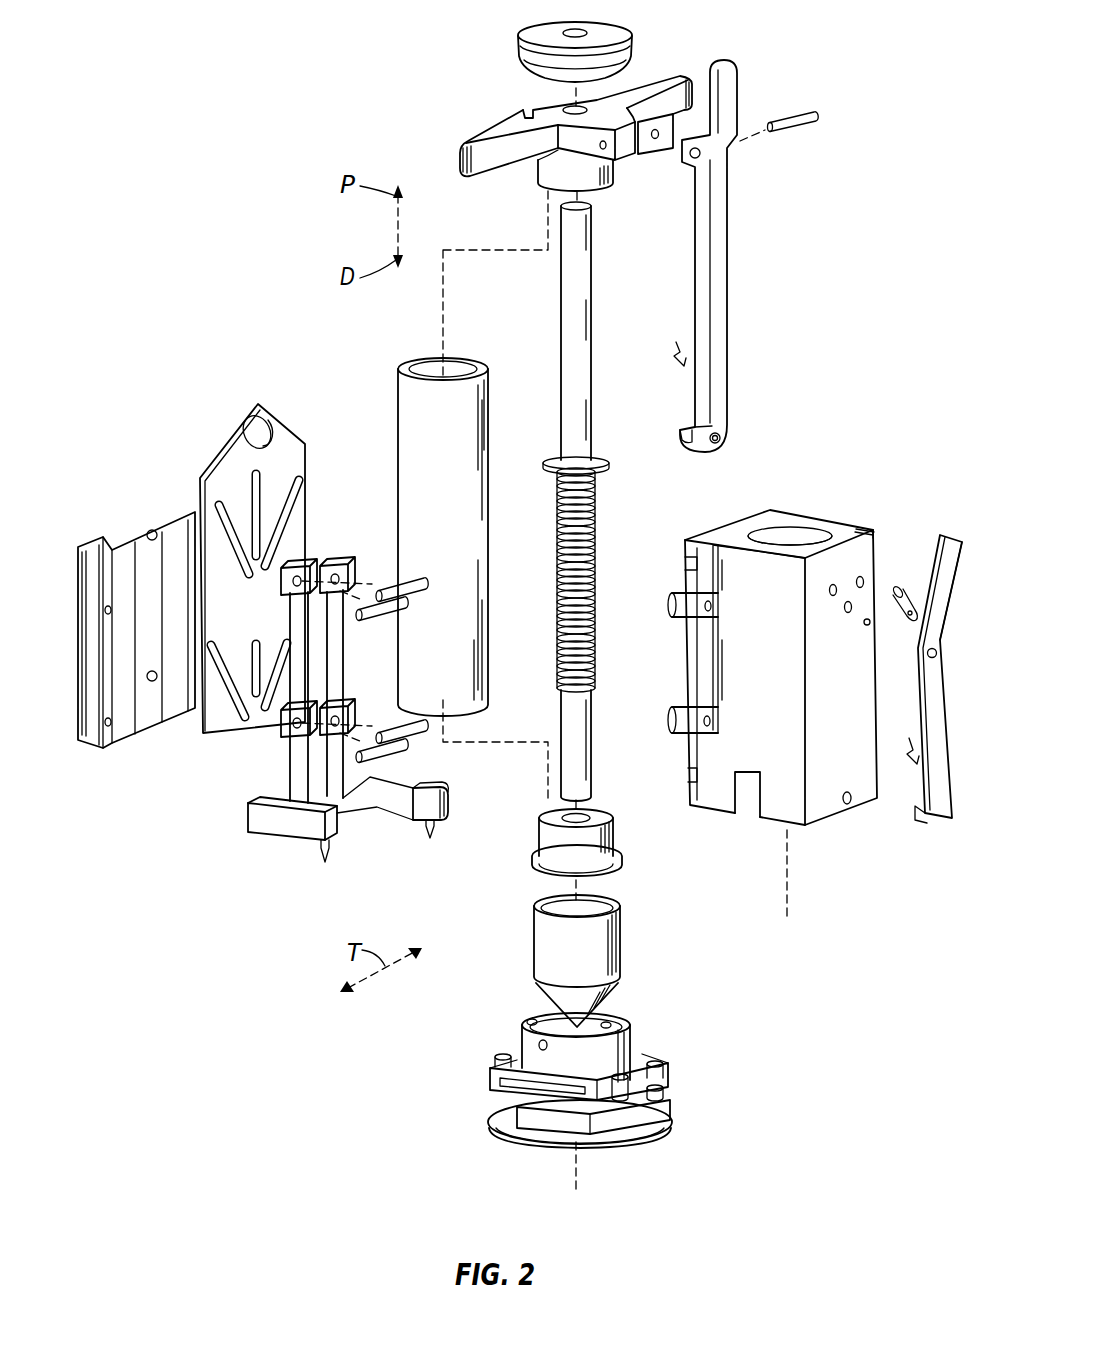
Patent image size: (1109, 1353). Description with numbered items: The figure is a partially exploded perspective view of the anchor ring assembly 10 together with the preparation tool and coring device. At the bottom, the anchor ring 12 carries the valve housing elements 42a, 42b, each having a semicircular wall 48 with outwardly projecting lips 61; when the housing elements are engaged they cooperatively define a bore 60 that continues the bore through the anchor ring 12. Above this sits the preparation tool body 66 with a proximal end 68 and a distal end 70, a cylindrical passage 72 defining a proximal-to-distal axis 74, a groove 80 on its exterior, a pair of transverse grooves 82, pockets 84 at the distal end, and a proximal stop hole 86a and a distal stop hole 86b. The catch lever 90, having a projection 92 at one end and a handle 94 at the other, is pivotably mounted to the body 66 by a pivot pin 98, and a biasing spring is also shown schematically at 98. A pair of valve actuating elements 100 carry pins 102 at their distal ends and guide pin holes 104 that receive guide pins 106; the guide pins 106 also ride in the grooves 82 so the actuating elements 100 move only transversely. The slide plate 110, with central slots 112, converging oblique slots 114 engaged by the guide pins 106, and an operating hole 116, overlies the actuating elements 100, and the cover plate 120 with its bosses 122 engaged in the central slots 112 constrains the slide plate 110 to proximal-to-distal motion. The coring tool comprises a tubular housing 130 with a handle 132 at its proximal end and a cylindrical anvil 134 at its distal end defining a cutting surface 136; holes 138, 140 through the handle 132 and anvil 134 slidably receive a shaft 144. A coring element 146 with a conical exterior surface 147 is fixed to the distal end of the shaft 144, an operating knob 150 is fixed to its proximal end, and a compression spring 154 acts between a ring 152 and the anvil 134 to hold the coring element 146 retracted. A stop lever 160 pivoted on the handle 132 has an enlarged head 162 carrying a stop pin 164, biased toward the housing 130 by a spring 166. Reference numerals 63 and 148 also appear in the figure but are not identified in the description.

The anchor ring assembly 10 is at (684, 1066).
The anchor ring 12 is at (507, 1139).
The valve housing element 42a is at (641, 1062).
The valve housing element 42b is at (519, 1059).
The semicircular wall 48 is at (523, 1021).
The bore 60 is at (604, 1017).
The lips 61 is at (528, 1017).
The central axis 63 is at (582, 1163).
The preparation tool body 66 is at (810, 524).
The proximal end 68 is at (760, 523).
The distal end 70 is at (797, 828).
The cylindrical passage 72 is at (790, 533).
The proximal-to-distal axis 74 is at (790, 912).
The groove 80 is at (860, 525).
The grooves 82 is at (672, 596).
The pockets 84 is at (752, 795).
The proximal stop hole 86a is at (845, 607).
The distal stop hole 86b is at (848, 806).
The catch lever 90 is at (950, 750).
The projection 92 is at (923, 820).
The handle 94 is at (957, 586).
The pivot pin 98 is at (900, 588).
The valve actuating elements 100 is at (421, 786).
The pins 102 is at (320, 850).
The guide pin holes 104 is at (334, 572).
The guide pins 106 is at (366, 604).
The slide plate 110 is at (224, 438).
The central slots 112 is at (268, 478).
The oblique slots 114 is at (296, 480).
The operating hole 116 is at (257, 416).
The cover plate 120 is at (130, 525).
The bosses 122 is at (152, 528).
The tubular housing 130 is at (405, 380).
The handle 132 is at (470, 146).
The anvil 134 is at (540, 840).
The cutting surface 136 is at (612, 875).
The hole 138 is at (568, 110).
The hole 140 is at (600, 815).
The shaft 144 is at (568, 312).
The coring element 146 is at (622, 952).
The conical exterior surface 147 is at (602, 985).
The cup rim 148 is at (538, 908).
The operating knob 150 is at (620, 46).
The ring 152 is at (607, 470).
The compression spring 154 is at (598, 622).
The stop lever 160 is at (730, 248).
The enlarged head 162 is at (728, 440).
The stop pin 164 is at (682, 434).
The spring 166 is at (672, 358).